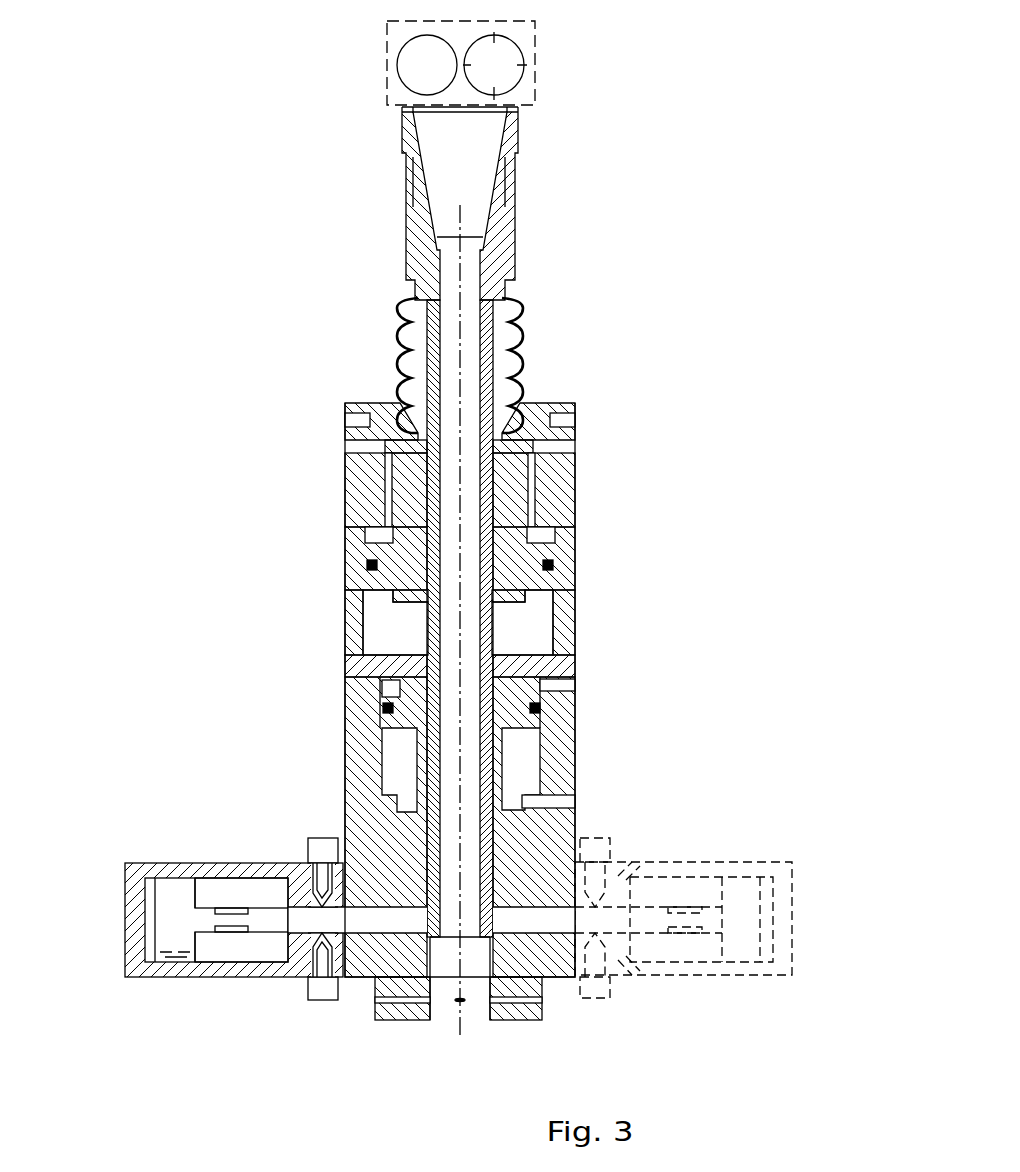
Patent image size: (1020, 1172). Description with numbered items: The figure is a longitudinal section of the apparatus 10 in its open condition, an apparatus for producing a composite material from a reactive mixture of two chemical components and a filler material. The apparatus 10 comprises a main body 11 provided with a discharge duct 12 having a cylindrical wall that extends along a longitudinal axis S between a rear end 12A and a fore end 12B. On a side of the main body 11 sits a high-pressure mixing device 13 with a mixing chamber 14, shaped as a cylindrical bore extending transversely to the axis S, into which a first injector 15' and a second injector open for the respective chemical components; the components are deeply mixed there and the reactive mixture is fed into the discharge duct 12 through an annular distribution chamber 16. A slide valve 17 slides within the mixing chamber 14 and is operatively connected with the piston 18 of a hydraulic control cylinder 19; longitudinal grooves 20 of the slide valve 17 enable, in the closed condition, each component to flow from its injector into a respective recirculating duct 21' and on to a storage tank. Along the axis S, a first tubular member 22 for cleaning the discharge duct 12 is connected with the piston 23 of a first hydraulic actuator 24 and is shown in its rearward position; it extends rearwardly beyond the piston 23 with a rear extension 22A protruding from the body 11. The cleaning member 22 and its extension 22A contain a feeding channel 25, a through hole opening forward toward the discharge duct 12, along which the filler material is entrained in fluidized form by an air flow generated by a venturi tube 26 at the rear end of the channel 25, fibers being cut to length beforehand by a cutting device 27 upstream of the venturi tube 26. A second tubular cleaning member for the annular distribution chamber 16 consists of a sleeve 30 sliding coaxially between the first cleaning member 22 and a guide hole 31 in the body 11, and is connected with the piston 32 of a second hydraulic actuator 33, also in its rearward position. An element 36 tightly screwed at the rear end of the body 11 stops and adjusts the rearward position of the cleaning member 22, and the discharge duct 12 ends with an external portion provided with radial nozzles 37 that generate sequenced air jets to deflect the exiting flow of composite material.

The apparatus 10 is at (262, 470).
The main body 11 is at (354, 718).
The discharge duct 12 is at (442, 1003).
The rear end 12A is at (420, 930).
The fore end 12B is at (385, 1022).
The high-pressure mixing device 13 is at (205, 838).
The mixing chamber 14 is at (275, 923).
The first injector 15' is at (492, 818).
The annular distribution chamber 16 is at (495, 927).
The slide valve 17 is at (242, 932).
The piston 18 is at (165, 935).
The hydraulic control cylinder 19 is at (170, 868).
The longitudinal grooves 20 is at (232, 907).
The recirculating duct 21' is at (305, 846).
The first tubular member 22 is at (485, 638).
The rear extension 22A is at (488, 377).
The piston 23 is at (527, 555).
The first hydraulic actuator 24 is at (380, 619).
The feeding channel 25 is at (472, 477).
The venturi tube 26 is at (470, 187).
The cutting device 27 is at (537, 33).
The sleeve 30 is at (493, 777).
The guide hole 31 is at (503, 838).
The piston 32 is at (380, 696).
The second hydraulic actuator 33 is at (523, 747).
The element 36 is at (350, 405).
The radial nozzles 37 is at (522, 1000).
The longitudinal axis S is at (460, 807).